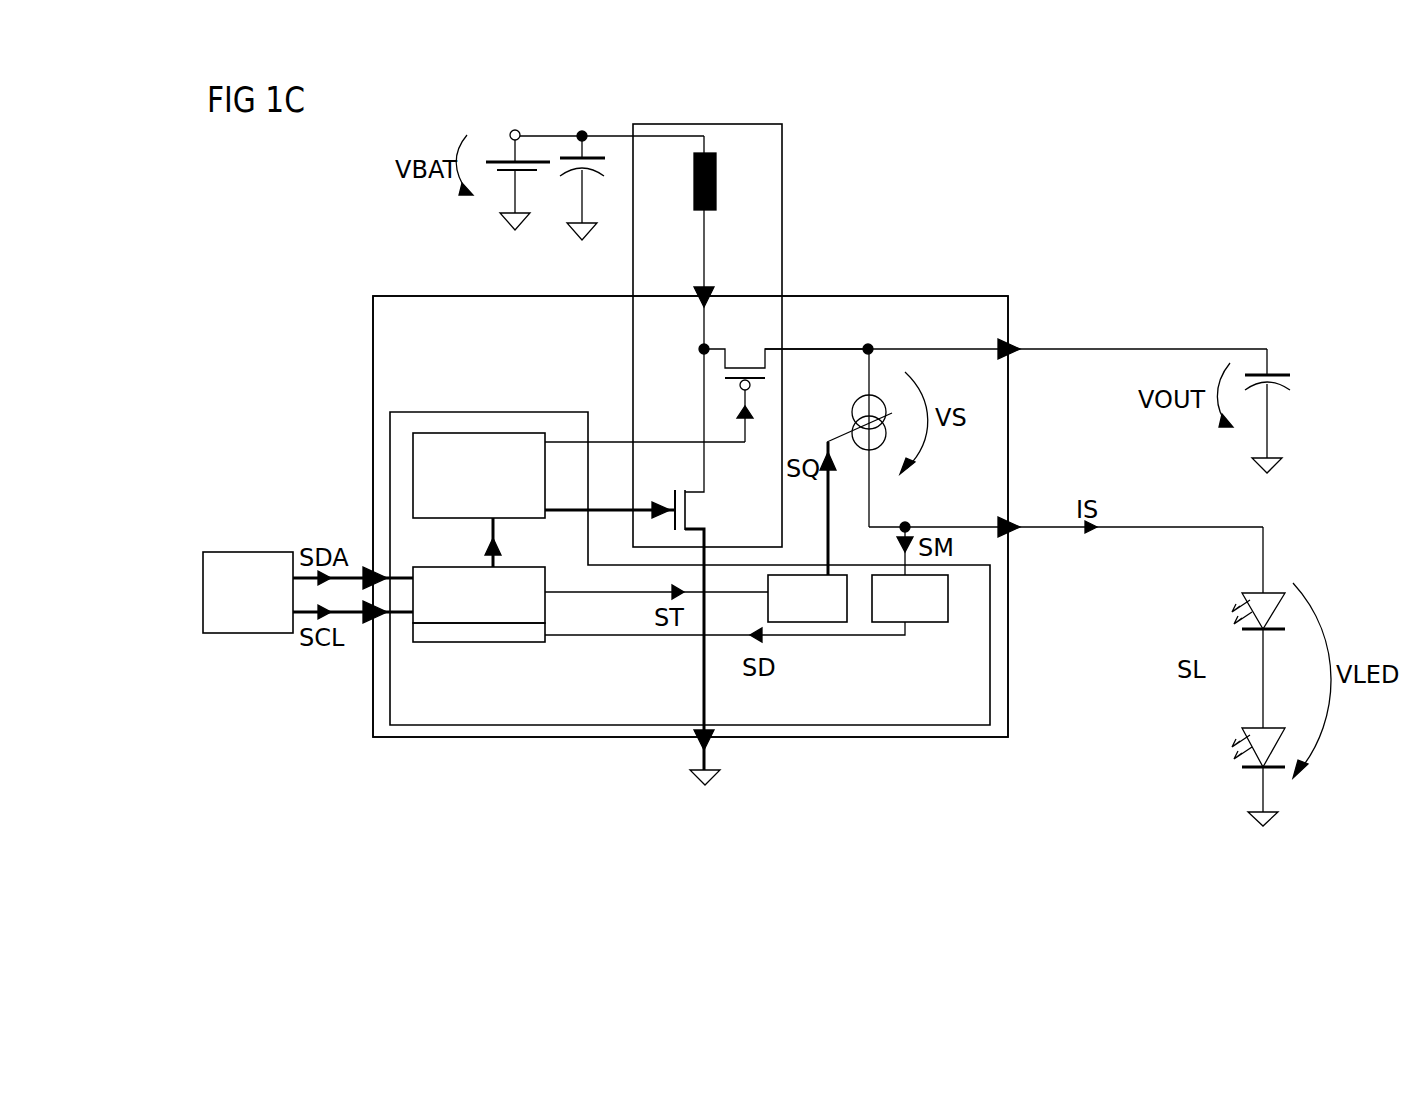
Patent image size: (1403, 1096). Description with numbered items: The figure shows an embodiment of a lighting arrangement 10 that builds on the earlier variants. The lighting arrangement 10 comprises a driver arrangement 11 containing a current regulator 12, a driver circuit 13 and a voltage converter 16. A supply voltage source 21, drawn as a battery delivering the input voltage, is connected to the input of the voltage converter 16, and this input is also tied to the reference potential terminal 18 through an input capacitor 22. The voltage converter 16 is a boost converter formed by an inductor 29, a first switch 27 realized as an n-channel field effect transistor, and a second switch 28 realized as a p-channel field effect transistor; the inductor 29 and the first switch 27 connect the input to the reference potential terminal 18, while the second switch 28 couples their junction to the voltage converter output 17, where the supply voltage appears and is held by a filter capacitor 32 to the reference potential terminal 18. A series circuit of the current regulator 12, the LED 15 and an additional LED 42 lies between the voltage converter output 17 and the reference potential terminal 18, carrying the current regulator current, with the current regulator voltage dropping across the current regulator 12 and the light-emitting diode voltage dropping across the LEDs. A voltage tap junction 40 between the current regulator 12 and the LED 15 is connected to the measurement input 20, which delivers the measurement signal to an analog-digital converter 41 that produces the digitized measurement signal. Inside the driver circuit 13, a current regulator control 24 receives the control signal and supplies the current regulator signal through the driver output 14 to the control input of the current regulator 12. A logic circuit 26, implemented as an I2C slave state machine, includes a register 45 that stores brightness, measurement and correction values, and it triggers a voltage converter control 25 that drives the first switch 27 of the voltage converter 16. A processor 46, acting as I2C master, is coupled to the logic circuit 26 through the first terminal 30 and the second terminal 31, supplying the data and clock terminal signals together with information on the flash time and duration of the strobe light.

The lighting arrangement 10 is at (1236, 195).
The driver arrangement 11 is at (982, 296).
The current regulator 12 is at (858, 398).
The driver circuit 13 is at (541, 412).
The driver output 14 is at (826, 562).
The LED 15 is at (1255, 593).
The voltage converter 16 is at (782, 200).
The voltage converter output 17 is at (782, 349).
The reference potential terminal 18 is at (578, 242).
The measurement input 20 is at (898, 562).
The supply voltage source 21 is at (503, 160).
The input capacitor 22 is at (602, 170).
The current regulator control 24 is at (768, 607).
The voltage converter control 25 is at (435, 518).
The logic circuit 26 is at (545, 607).
The first switch 27 is at (692, 488).
The second switch 28 is at (730, 366).
The inductor 29 is at (722, 197).
The first terminal 30 is at (368, 566).
The second terminal 31 is at (365, 625).
The filter capacitor 32 is at (1283, 372).
The voltage tap junction 40 is at (908, 524).
The analog-digital converter 41 is at (920, 622).
The additional LED 42 is at (1253, 728).
The register 45 is at (445, 642).
The processor 46 is at (238, 634).